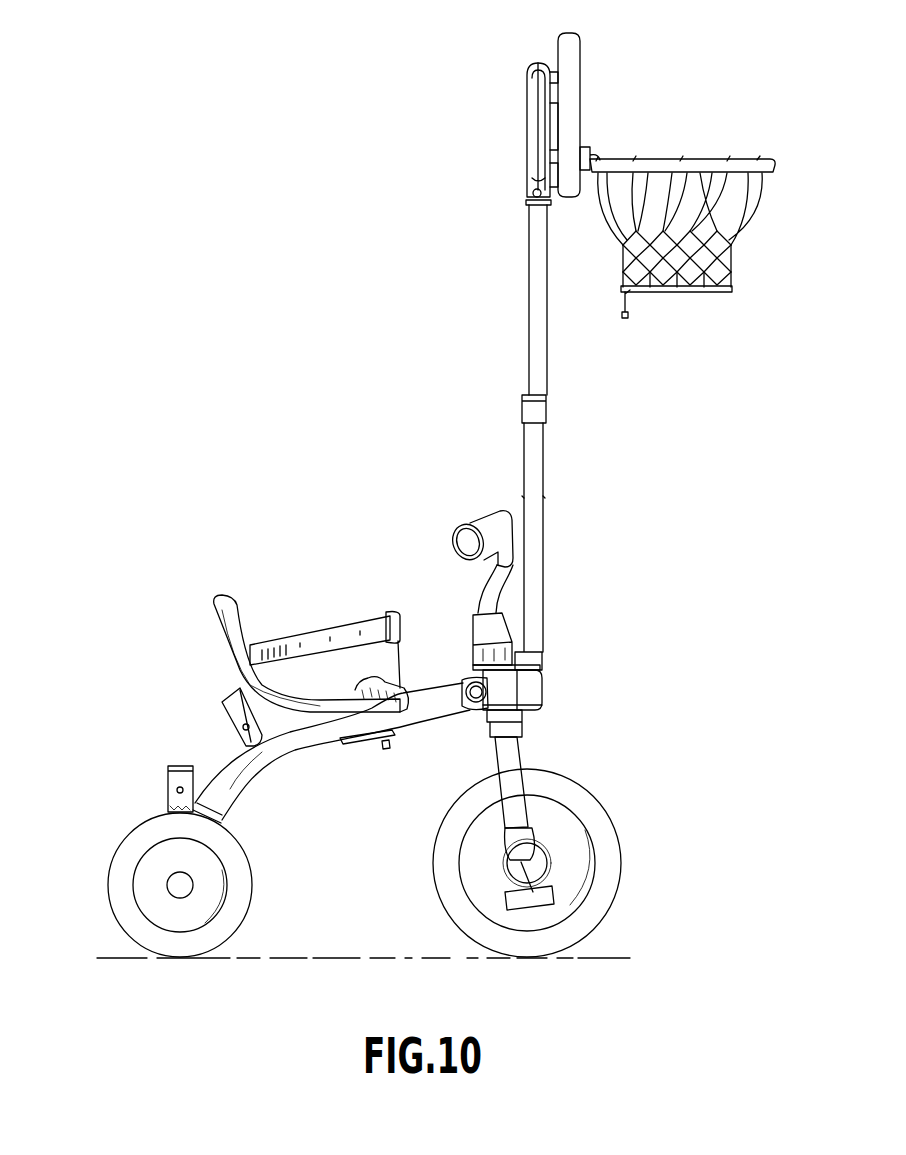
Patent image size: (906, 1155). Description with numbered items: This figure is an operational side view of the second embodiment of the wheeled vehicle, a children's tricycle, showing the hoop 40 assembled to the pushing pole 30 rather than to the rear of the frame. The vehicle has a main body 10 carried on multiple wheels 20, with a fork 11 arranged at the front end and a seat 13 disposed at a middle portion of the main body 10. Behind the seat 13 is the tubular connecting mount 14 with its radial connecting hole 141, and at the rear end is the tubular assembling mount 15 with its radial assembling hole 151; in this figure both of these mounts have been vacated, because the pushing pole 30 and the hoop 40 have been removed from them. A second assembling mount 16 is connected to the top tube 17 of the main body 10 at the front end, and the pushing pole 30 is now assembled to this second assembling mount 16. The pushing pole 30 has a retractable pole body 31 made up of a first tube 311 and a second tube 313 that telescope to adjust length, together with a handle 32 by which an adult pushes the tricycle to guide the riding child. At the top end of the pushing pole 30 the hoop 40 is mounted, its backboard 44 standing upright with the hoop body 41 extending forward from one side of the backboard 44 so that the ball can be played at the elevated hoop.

The main body 10 is at (348, 537).
The fork 11 is at (510, 757).
The seat 13 is at (226, 627).
The connecting mount 14 is at (218, 705).
The connecting hole 141 is at (242, 729).
The assembling mount 15 is at (167, 770).
The assembling hole 151 is at (178, 791).
The second assembling mount 16 is at (530, 682).
The top tube 17 is at (448, 700).
The wheels 20 is at (604, 863).
The pushing pole 30 is at (497, 317).
The pole body 31 is at (548, 403).
The first tube 311 is at (544, 454).
The second tube 313 is at (536, 291).
The handle 32 is at (526, 123).
The hoop 40 is at (694, 96).
The hoop body 41 is at (745, 166).
The backboard 44 is at (584, 51).